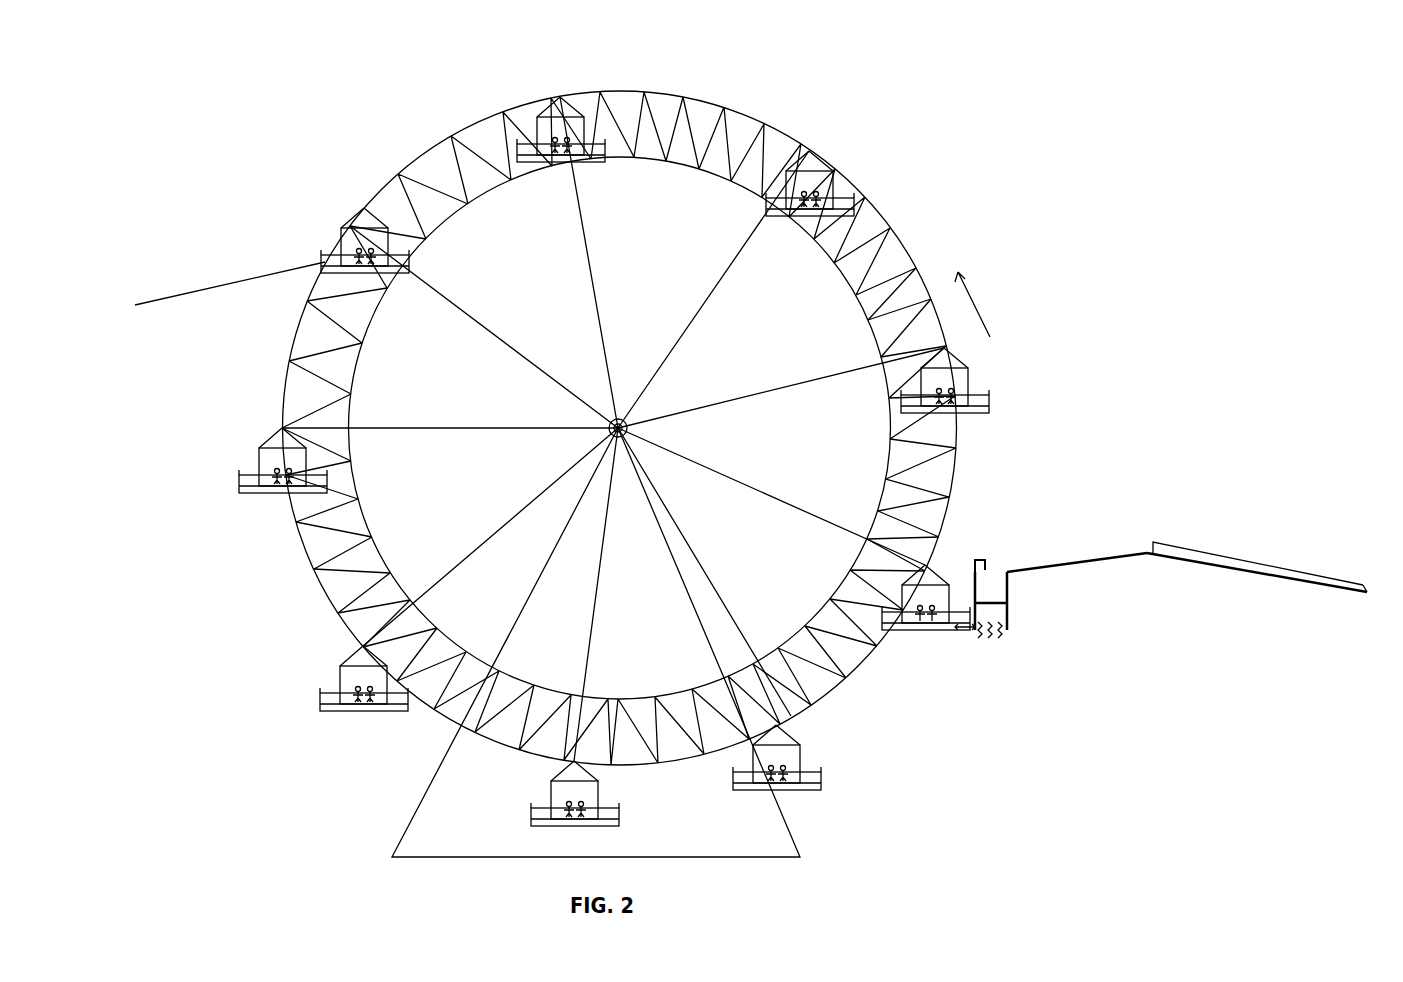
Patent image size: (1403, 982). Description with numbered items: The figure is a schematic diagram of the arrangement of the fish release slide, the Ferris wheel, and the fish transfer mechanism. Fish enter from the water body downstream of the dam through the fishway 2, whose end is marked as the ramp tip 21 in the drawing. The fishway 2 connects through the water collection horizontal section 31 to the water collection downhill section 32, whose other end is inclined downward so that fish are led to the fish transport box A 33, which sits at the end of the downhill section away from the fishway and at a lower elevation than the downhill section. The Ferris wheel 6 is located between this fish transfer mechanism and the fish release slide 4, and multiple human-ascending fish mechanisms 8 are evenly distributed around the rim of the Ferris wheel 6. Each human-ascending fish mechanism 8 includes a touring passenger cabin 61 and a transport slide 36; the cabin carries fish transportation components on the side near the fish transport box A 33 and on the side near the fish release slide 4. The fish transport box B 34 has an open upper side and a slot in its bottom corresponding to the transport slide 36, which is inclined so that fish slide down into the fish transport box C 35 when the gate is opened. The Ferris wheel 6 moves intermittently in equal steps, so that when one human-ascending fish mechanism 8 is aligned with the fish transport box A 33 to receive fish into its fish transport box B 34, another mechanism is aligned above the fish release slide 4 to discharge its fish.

The Ferris wheel 6 is at (688, 100).
The human-ascending fish mechanism 8 is at (835, 186).
The fish release slide 4 is at (235, 277).
The touring passenger cabin 61 is at (972, 370).
The transport slide 36 is at (913, 633).
The fish transport box C 35 is at (887, 617).
The fish transport box B 34 is at (960, 628).
The fish transport box A 33 is at (1063, 623).
The water collection downhill section 32 is at (1077, 560).
The water collection horizontal section 31 is at (1143, 553).
The fishway 2 is at (1252, 562).
The ramp end 21 is at (1362, 588).